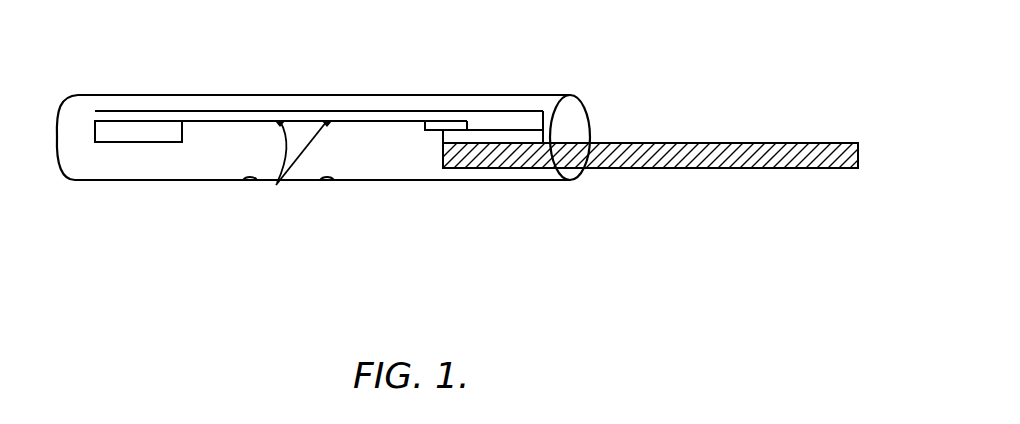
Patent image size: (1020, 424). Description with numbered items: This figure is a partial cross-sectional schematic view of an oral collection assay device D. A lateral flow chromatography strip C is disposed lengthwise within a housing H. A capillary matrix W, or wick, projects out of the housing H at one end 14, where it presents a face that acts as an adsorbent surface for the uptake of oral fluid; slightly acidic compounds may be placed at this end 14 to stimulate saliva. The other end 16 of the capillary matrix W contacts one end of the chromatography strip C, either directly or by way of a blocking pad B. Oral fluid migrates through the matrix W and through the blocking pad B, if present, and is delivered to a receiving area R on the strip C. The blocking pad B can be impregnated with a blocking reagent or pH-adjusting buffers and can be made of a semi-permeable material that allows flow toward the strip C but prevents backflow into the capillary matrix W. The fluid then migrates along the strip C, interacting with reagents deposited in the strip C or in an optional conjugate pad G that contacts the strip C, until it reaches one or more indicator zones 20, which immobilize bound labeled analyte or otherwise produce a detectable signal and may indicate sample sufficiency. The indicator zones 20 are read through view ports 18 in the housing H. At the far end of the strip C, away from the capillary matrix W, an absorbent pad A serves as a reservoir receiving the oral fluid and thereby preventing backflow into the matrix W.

The assay device D is at (327, 66).
The housing H is at (167, 184).
The absorbent pad A is at (128, 142).
The lateral flow chromatography strip C is at (358, 121).
The conjugate pad G is at (445, 116).
The receiving area R is at (485, 120).
The blocking pad B is at (506, 134).
The capillary matrix W is at (816, 172).
The end of capillary matrix 14 is at (858, 142).
The end of capillary matrix 16 is at (503, 168).
The view ports 18 is at (250, 183).
The indicator zones 20 is at (276, 185).